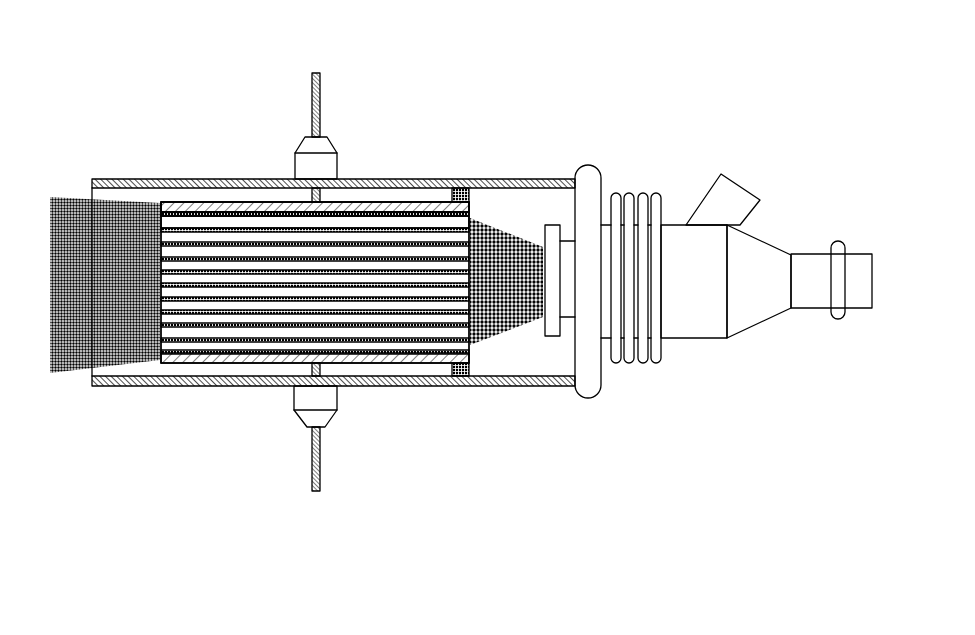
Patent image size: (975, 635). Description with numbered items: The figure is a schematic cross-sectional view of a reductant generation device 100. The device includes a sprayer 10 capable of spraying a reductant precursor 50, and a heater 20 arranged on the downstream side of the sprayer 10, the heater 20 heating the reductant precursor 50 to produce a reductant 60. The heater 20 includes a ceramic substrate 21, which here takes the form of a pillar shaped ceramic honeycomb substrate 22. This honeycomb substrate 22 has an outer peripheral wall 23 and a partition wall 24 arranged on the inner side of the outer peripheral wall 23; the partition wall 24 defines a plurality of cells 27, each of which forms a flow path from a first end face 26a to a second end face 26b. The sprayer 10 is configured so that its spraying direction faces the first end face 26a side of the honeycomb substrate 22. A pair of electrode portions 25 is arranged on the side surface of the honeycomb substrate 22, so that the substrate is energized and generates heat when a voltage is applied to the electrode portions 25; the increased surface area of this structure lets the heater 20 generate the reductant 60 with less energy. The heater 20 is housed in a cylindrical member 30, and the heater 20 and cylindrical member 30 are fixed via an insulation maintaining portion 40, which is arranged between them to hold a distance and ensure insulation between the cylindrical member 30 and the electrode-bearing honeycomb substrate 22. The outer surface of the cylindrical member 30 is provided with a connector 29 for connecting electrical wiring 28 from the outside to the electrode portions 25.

The sprayer 10 is at (681, 270).
The heater 20 is at (292, 65).
The ceramic substrate 21 is at (290, 122).
The pillar shaped ceramic honeycomb substrate 22 is at (315, 285).
The outer peripheral wall 23 is at (268, 213).
The partition wall 24 is at (217, 230).
The electrode portions 25 is at (182, 210).
The first end face 26a is at (478, 215).
The second end face 26b is at (160, 233).
The cells 27 is at (375, 220).
The electrical wiring 28 is at (323, 87).
The connector 29 is at (325, 150).
The cylindrical member 30 is at (413, 178).
The insulation maintaining portion 40 is at (465, 179).
The reductant precursor 50 is at (510, 243).
The reductant 60 is at (92, 227).
The reductant generation device 100 is at (410, 527).